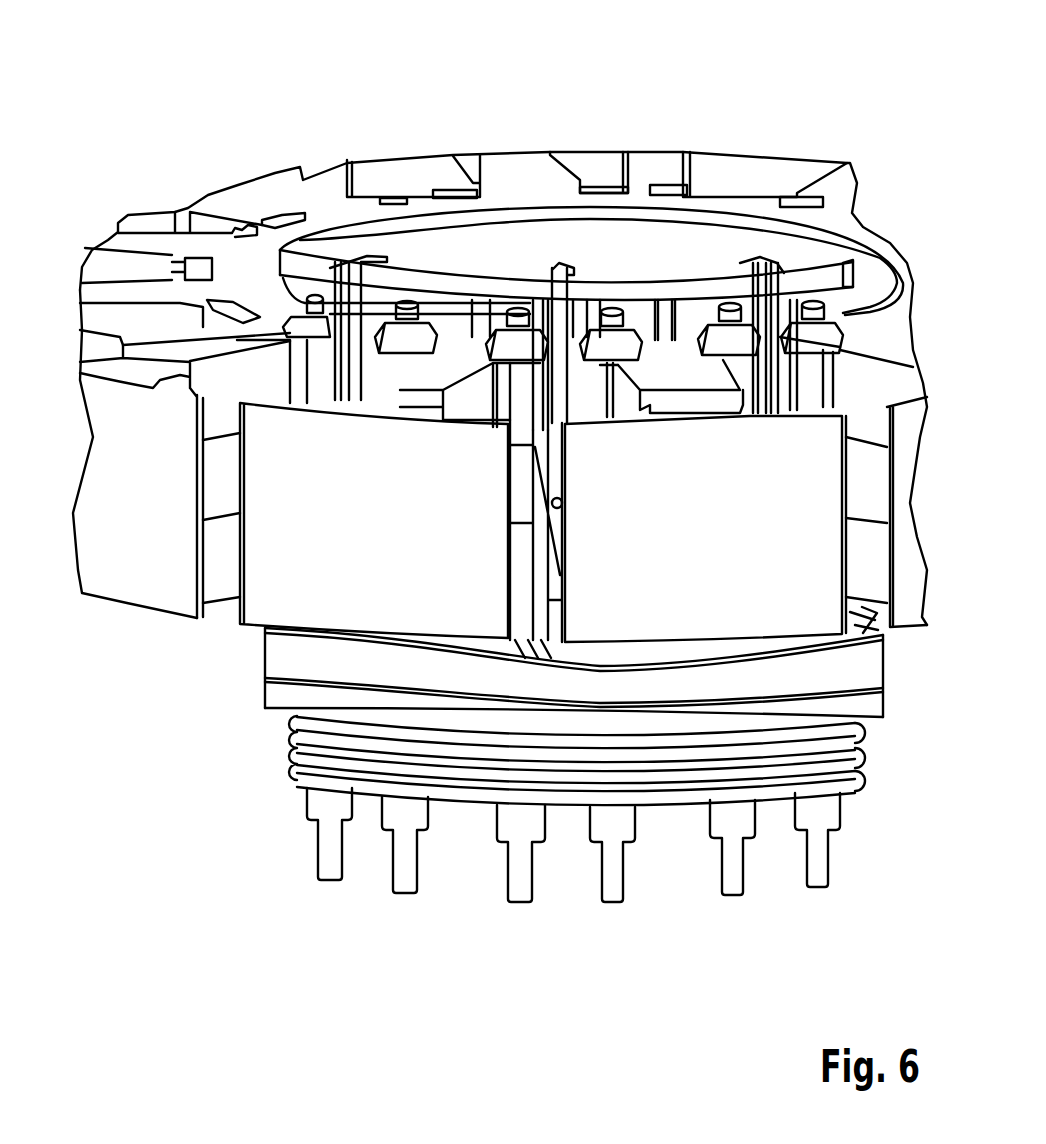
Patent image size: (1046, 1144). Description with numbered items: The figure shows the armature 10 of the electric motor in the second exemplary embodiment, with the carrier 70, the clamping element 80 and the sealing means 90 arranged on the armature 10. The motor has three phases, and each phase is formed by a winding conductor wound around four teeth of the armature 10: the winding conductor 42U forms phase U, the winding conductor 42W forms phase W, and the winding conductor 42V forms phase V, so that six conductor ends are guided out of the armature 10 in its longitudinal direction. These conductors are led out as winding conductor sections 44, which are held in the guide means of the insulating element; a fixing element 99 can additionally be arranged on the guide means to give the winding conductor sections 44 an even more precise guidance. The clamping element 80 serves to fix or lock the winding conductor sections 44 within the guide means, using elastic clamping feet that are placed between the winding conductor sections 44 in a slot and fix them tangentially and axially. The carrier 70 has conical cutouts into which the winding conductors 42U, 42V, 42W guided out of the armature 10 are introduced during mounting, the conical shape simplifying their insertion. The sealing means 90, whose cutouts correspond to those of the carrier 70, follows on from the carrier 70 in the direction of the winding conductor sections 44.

The armature 10 is at (823, 89).
The carrier 70 is at (529, 258).
The fixing element 99 is at (740, 358).
The winding conductor section 44 is at (517, 477).
The clamping element 80 is at (287, 648).
The sealing means 90 is at (283, 752).
The winding conductor 42V is at (330, 880).
The winding conductor 42W is at (405, 893).
The winding conductor 42U is at (520, 902).